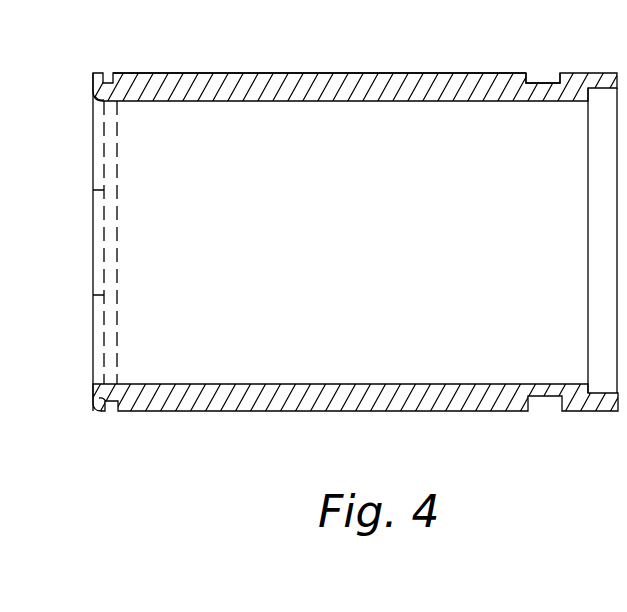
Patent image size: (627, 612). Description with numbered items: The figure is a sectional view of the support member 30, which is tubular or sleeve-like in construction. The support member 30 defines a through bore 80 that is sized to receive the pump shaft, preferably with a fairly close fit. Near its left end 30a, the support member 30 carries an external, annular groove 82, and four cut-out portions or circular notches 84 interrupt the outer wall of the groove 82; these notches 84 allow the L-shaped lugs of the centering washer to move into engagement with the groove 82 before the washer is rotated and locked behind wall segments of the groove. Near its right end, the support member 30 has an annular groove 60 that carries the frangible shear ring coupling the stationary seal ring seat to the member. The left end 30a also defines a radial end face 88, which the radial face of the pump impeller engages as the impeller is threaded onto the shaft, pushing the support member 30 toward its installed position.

The support member 30 is at (294, 66).
The left end 30a is at (122, 74).
The annular groove 60 is at (534, 82).
The through bore 80 is at (358, 237).
The external annular groove 82 is at (105, 411).
The circular notches 84 is at (98, 250).
The radial end face 88 is at (98, 99).